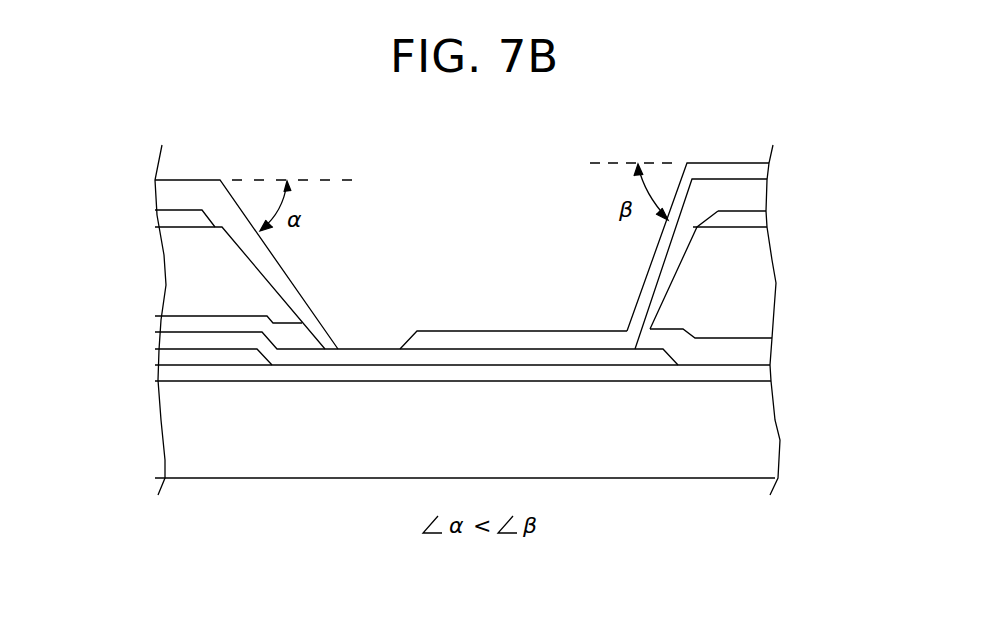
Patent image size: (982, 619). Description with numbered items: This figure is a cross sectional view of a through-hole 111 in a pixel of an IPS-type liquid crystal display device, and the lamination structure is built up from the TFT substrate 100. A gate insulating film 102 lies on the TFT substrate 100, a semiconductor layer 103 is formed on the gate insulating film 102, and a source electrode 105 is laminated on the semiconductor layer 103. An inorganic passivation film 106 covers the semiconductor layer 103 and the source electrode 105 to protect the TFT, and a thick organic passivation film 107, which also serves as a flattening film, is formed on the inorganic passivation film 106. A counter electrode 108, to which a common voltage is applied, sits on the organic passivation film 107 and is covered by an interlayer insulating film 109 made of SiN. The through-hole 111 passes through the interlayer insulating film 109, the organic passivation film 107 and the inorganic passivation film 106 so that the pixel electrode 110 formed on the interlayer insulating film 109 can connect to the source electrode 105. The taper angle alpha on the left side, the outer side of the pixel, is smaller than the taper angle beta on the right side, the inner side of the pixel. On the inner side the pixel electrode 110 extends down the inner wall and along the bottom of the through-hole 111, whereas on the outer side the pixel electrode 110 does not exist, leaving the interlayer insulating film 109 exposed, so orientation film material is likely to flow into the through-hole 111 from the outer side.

The TFT substrate 100 is at (757, 437).
The gate insulating film 102 is at (755, 380).
The semiconductor layer 103 is at (160, 362).
The source electrode 105 is at (170, 345).
The inorganic passivation film 106 is at (163, 325).
The organic passivation film 107 is at (177, 283).
The counter electrode 108 is at (157, 218).
The interlayer insulating film 109 is at (755, 195).
The pixel electrode 110 is at (757, 173).
The through-hole 111 is at (483, 208).